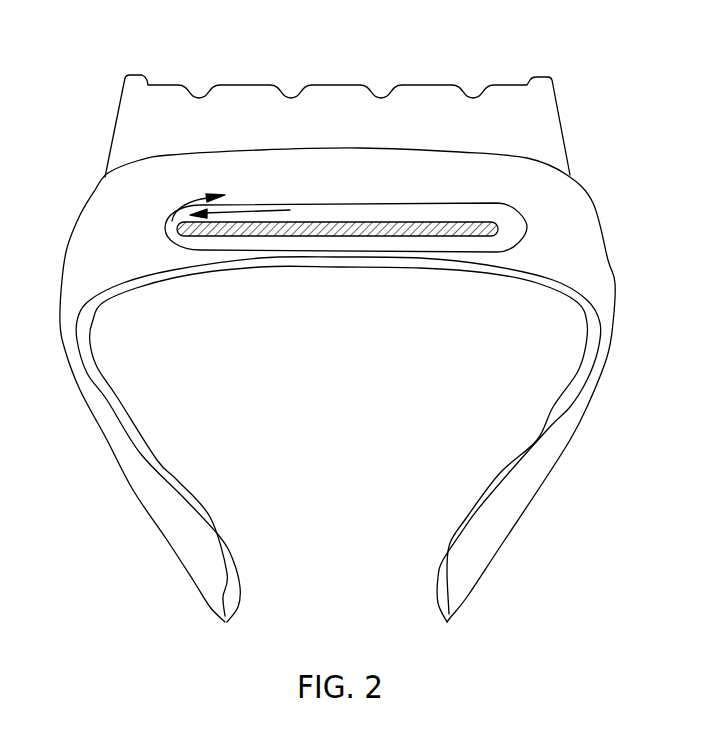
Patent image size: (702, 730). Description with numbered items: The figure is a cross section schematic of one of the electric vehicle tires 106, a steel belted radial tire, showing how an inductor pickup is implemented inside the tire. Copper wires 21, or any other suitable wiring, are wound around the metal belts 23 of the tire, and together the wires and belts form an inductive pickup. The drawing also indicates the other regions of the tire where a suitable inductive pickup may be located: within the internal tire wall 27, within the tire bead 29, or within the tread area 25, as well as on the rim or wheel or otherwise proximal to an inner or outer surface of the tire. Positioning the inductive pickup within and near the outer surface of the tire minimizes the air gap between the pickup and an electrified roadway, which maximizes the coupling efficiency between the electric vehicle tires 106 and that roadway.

The electric vehicle tires 106 is at (314, 317).
The copper wires 21 is at (163, 227).
The metal belts 23 is at (368, 228).
The tread area 25 is at (352, 102).
The internal tire wall 27 is at (522, 455).
The tire bead 29 is at (470, 522).